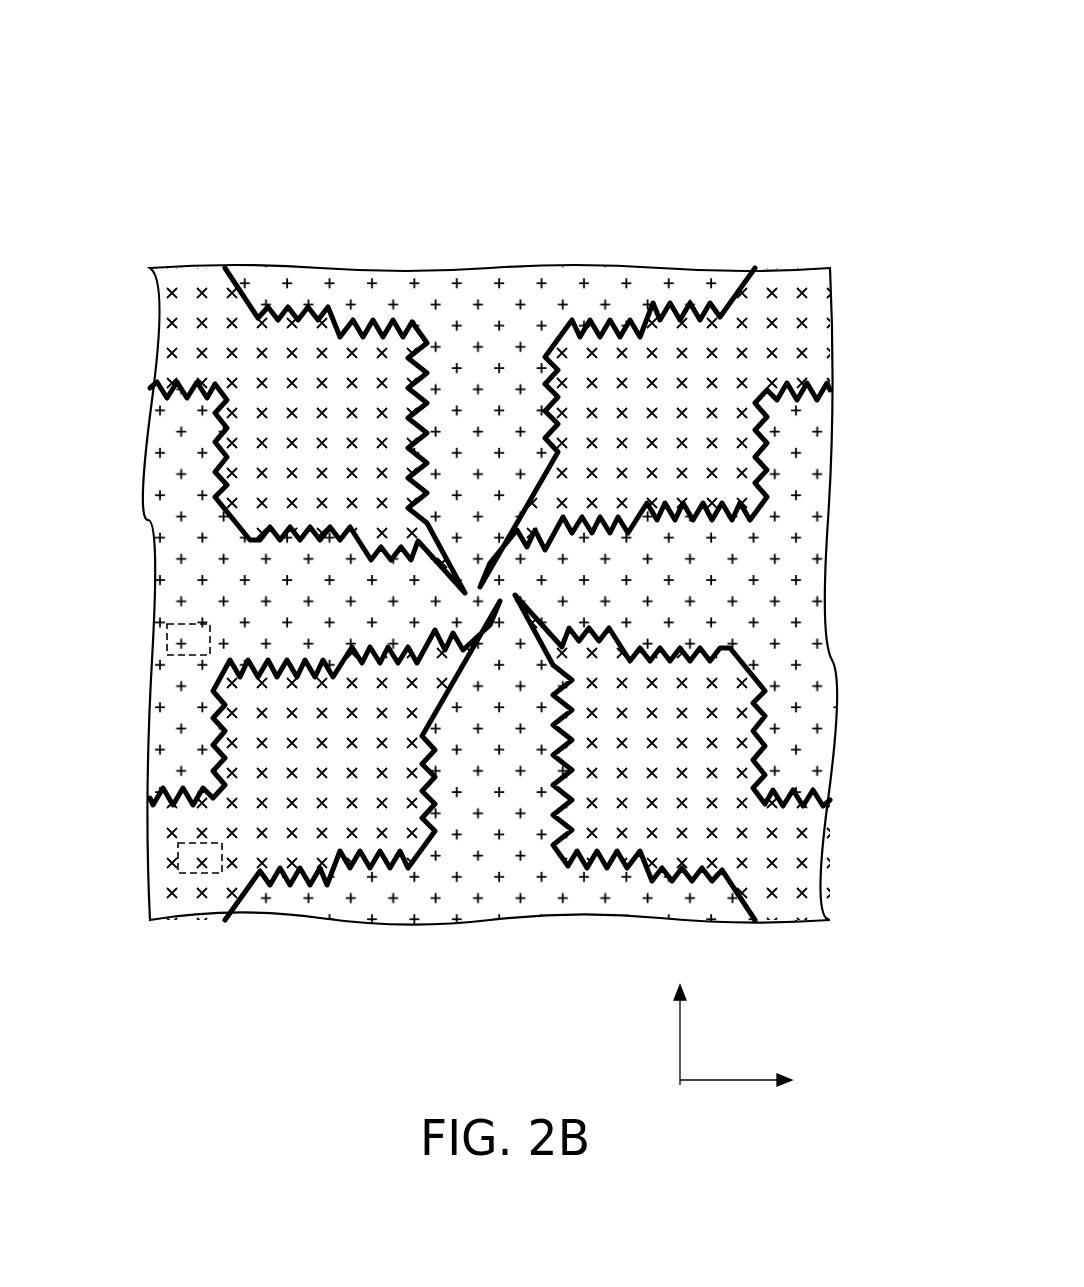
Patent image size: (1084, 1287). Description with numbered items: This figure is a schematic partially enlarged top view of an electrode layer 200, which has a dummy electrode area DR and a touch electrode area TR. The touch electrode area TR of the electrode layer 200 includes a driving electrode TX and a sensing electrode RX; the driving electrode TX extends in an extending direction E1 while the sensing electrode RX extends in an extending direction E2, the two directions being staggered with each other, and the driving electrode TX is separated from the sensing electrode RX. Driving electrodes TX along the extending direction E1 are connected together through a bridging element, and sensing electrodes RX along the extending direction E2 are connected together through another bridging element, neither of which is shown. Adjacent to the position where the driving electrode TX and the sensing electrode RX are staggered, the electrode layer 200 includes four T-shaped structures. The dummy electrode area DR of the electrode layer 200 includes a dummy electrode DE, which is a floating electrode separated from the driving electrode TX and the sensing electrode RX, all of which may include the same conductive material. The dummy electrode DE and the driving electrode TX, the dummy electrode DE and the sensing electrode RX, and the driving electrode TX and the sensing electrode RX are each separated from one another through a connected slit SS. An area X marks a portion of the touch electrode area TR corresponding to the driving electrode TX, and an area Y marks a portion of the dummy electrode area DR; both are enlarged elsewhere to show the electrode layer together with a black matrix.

The electrode layer 200 is at (501, 514).
The touch electrode area TR is at (501, 514).
The dummy electrode area DR is at (495, 496).
The driving electrode TX is at (246, 597).
The sensing electrode RX is at (485, 400).
The dummy electrode DE is at (293, 405).
The slit SS is at (213, 734).
The area X is at (165, 642).
The area Y is at (190, 873).
The extending direction of the driving electrode E1 is at (759, 1083).
The extending direction of the sensing electrode E2 is at (701, 1033).